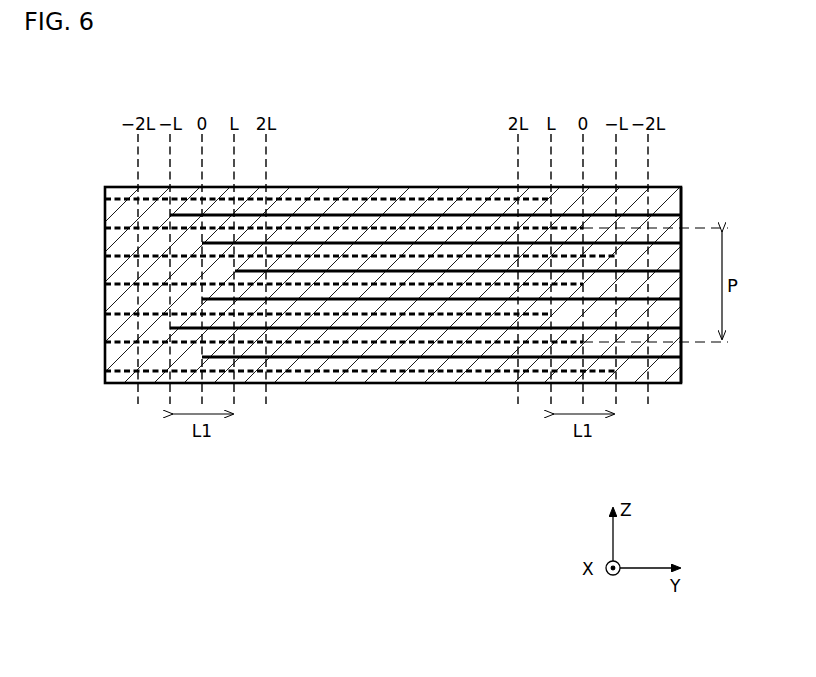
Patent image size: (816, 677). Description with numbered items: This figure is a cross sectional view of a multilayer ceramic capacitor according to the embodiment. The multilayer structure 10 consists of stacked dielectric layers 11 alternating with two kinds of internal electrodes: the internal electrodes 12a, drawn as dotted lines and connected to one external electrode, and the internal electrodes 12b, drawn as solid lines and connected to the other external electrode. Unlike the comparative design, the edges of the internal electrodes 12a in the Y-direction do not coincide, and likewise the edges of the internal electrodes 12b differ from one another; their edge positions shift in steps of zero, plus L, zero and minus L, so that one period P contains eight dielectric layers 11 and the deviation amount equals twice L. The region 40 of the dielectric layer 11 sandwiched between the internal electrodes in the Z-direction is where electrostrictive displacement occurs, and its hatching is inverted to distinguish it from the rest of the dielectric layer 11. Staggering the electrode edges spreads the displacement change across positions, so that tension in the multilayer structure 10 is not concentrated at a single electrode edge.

The multilayer structure 10 is at (457, 191).
The dielectric layer 11 is at (672, 197).
The internal electrode 12a is at (281, 199).
The internal electrode 12b is at (385, 215).
The region 40 is at (323, 210).